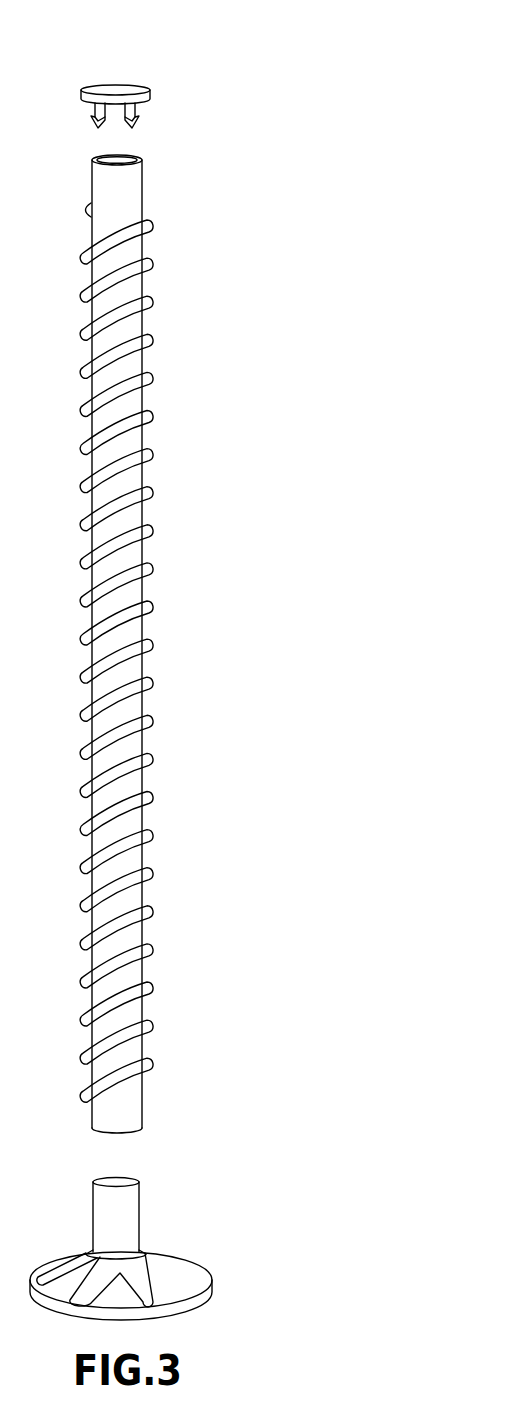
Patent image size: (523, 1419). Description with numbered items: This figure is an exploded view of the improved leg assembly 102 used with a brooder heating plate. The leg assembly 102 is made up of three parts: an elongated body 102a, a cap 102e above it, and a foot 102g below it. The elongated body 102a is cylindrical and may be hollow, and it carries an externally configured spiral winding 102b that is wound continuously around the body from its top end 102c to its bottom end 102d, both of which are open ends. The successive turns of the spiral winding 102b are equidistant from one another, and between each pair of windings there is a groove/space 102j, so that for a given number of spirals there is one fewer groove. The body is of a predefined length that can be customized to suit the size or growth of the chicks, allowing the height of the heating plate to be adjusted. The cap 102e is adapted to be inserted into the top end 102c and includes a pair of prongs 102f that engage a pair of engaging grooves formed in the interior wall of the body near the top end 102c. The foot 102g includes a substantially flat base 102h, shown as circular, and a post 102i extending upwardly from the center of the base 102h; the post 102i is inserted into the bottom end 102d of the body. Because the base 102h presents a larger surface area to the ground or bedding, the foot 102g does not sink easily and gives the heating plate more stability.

The leg assembly 102 is at (158, 70).
The elongated body 102a is at (142, 317).
The spiral winding 102b is at (143, 570).
The top end 102c is at (93, 165).
The bottom end 102d is at (140, 1120).
The cap 102e is at (84, 96).
The prongs 102f is at (136, 122).
The foot 102g is at (217, 1270).
The base 102h is at (163, 1275).
The post 102i is at (107, 1198).
The groove/space 102j is at (133, 667).